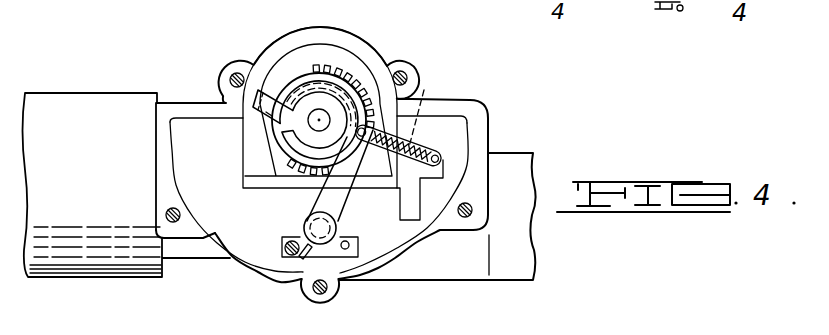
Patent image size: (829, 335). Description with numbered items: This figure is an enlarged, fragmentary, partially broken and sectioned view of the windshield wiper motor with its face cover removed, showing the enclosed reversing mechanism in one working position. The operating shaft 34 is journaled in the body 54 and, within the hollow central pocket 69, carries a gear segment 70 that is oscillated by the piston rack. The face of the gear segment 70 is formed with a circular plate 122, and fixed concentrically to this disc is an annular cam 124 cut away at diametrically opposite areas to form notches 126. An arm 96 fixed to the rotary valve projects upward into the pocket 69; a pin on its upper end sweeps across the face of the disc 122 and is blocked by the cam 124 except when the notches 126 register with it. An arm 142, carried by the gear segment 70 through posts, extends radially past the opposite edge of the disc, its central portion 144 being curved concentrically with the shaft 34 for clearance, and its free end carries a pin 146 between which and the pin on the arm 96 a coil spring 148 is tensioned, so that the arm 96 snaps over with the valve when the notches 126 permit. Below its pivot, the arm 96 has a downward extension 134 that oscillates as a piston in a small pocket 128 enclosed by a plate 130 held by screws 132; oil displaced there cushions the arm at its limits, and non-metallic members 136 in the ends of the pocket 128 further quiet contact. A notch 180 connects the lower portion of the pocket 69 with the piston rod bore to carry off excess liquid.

The body 54 is at (247, 61).
The arm 142 is at (278, 92).
The operating shaft 34 is at (318, 112).
The central portion of the arm 144 is at (316, 60).
The pocket 69 is at (333, 52).
The gear segment 70 is at (352, 88).
The circular plate 122 is at (388, 67).
The coil spring 148 is at (424, 93).
The pin 146 is at (440, 156).
The notches 126 is at (275, 120).
The annular cam 124 is at (283, 141).
The non-metallic members 136 is at (298, 232).
The plate 130 is at (289, 240).
The arm 96 is at (343, 199).
The screws 132 is at (296, 254).
The extension 134 is at (300, 258).
The pocket 128 is at (343, 282).
The notch 180 is at (410, 205).